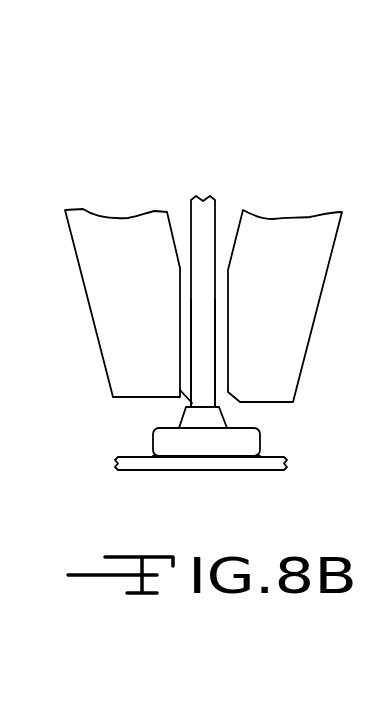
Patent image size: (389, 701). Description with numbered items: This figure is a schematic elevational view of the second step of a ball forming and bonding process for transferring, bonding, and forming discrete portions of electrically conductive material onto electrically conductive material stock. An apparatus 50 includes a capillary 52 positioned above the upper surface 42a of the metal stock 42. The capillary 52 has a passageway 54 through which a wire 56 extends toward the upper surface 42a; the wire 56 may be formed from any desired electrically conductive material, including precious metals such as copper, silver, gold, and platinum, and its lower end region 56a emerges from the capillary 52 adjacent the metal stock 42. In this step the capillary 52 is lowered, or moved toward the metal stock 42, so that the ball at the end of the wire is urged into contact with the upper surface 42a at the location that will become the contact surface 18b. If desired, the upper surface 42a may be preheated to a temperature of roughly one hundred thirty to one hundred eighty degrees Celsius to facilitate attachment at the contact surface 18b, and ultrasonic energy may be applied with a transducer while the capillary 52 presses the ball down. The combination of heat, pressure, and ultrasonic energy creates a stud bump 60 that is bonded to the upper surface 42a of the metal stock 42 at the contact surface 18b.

The apparatus 50 is at (105, 193).
The capillary 52 is at (88, 254).
The passageway 54 is at (180, 282).
The wire 56 is at (203, 328).
The distal end of outer tube 56a is at (201, 395).
The stud bump 60 is at (225, 437).
The contact surface 18b is at (237, 453).
The upper surface 42a is at (132, 455).
The metal stock 42 is at (200, 462).